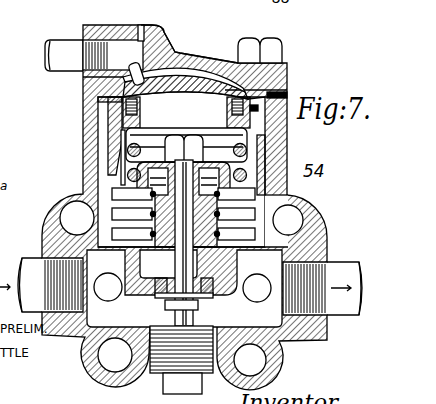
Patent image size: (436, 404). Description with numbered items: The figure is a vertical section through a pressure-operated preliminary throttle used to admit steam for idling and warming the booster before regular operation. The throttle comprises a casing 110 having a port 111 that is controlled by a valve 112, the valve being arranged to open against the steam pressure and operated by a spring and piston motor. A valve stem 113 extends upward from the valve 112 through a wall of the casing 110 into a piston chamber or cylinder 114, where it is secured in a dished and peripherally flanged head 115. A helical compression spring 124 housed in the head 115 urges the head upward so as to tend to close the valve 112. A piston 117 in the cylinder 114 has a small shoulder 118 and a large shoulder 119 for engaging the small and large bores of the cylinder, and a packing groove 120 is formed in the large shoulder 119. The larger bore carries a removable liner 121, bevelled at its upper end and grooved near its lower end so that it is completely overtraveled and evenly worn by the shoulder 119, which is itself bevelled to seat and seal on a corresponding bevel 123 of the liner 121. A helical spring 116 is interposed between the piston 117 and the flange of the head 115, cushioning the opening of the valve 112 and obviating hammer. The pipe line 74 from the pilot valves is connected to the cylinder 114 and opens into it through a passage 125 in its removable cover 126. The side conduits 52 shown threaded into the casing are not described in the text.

The pipe line 74 is at (55, 50).
The passage 125 is at (139, 64).
The removable cover 126 is at (220, 60).
The piston 117 is at (192, 87).
The large shoulder 119 is at (288, 87).
The packing groove 120 is at (97, 99).
The removable liner 121 is at (106, 128).
The helical spring 116 is at (152, 152).
The piston chamber or cylinder 114 is at (288, 138).
The bevel 123 is at (119, 167).
The dished and peripherally flanged head 115 is at (65, 196).
The small shoulder 118 is at (252, 194).
The conduit 52 is at (343, 262).
The valve stem 113 is at (178, 240).
The helical compression spring 124 is at (232, 225).
The port 111 is at (158, 295).
The valve 112 is at (171, 302).
The casing 110 is at (78, 337).